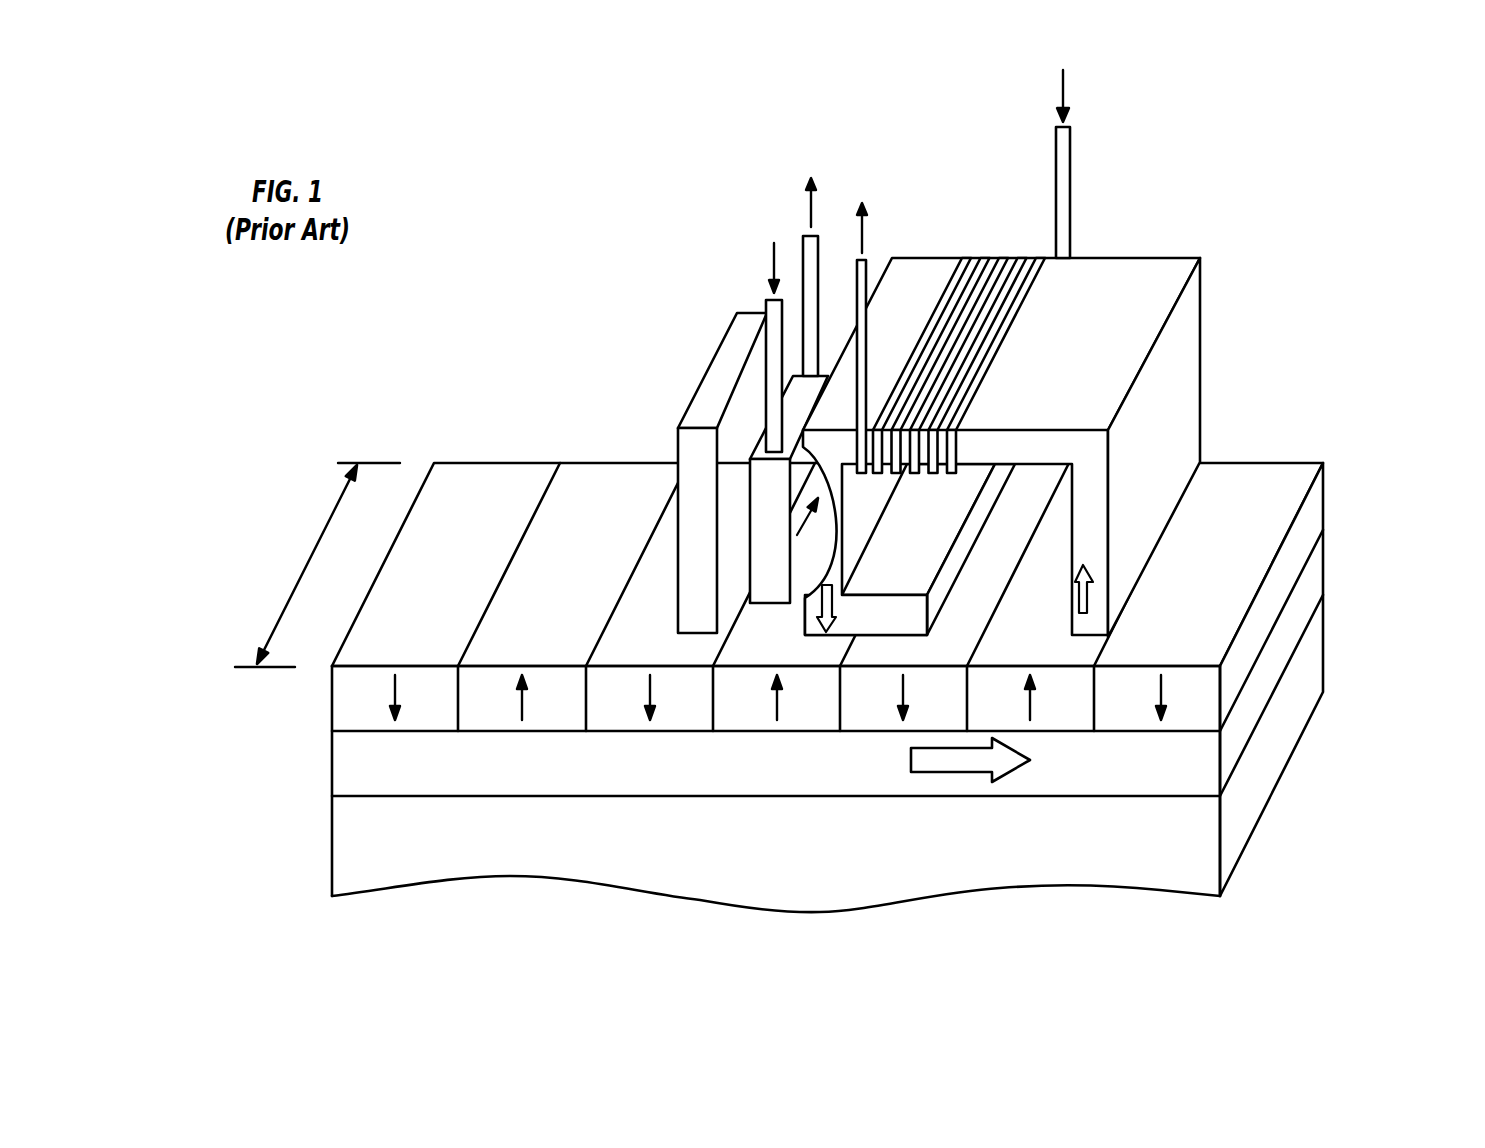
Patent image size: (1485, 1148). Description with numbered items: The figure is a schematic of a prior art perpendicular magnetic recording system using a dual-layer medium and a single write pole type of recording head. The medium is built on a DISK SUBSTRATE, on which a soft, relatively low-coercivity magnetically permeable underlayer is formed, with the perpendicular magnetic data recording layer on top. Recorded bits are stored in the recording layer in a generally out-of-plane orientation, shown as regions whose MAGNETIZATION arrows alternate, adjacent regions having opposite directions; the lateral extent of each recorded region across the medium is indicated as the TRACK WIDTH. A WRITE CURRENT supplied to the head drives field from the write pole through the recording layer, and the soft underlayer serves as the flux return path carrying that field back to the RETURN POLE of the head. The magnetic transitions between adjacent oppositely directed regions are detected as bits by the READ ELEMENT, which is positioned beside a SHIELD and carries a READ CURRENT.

The write current lead WRITE CURRENT is at (1066, 87).
The read current leads READ CURRENT is at (808, 212).
The read element READ ELEMENT is at (763, 470).
The shield SHIELD is at (687, 450).
The return pole RETURN POLE is at (815, 630).
The track width dimension TRACK WIDTH is at (315, 565).
The magnetization direction MAGNETIZATION is at (1162, 693).
The disk substrate DISK SUBSTRATE is at (488, 845).